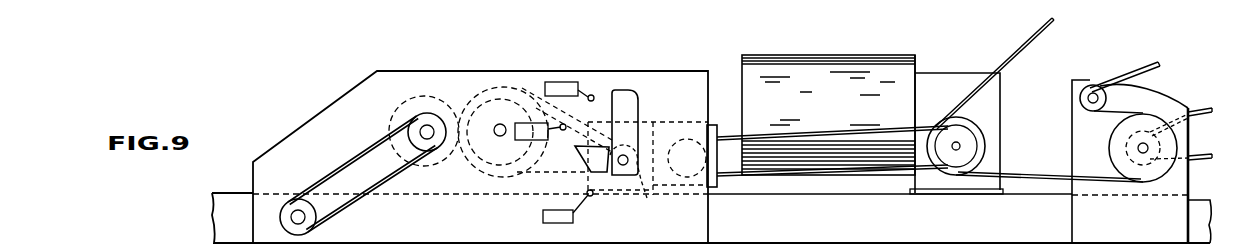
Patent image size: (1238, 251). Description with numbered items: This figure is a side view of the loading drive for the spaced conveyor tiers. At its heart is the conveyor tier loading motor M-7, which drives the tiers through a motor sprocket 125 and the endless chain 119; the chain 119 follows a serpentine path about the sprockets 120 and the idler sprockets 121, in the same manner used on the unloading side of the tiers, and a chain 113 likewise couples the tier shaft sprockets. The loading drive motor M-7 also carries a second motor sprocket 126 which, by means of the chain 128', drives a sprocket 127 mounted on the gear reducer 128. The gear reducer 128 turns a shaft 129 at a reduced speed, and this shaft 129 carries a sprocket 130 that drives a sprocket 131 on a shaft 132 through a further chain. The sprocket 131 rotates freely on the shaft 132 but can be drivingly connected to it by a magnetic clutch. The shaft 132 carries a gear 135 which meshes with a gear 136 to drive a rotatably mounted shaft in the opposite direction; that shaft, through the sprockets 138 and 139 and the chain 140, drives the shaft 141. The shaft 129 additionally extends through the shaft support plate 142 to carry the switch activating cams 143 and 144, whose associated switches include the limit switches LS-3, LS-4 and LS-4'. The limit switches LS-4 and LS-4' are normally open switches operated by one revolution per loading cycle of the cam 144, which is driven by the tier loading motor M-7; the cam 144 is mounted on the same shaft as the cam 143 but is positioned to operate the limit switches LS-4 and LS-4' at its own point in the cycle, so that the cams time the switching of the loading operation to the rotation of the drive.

The chain 113 is at (1211, 107).
The endless chain 119 is at (1048, 30).
The sprockets 120 is at (1109, 155).
The idler sprockets 121 is at (1080, 98).
The motor sprocket 125 is at (984, 128).
The motor sprocket 126 is at (976, 150).
The sprocket 127 is at (684, 141).
The gear reducer 128 is at (697, 115).
The chain 128' is at (832, 138).
The shaft 129 is at (627, 165).
The sprocket 130 is at (647, 198).
The sprocket 131 is at (529, 85).
The shaft 132 is at (503, 114).
The gear 135 is at (493, 98).
The gear 136 is at (431, 93).
The sprocket 138 is at (417, 120).
The sprocket 139 is at (328, 190).
The chain 140 is at (383, 186).
The shaft 141 is at (295, 212).
The shaft support plate 142 is at (618, 72).
The switch activating cam 143 is at (587, 164).
The switch activating cam 144 is at (635, 102).
The limit switch LS-3 is at (543, 217).
The limit switch LS-4 is at (520, 140).
The limit switch LS-4' is at (569, 55).
The conveyor tier loading motor M-7 is at (862, 55).